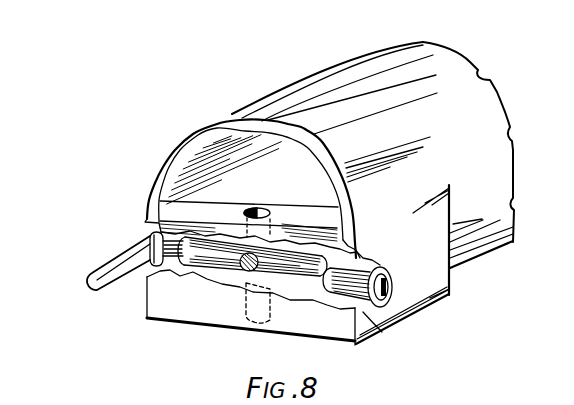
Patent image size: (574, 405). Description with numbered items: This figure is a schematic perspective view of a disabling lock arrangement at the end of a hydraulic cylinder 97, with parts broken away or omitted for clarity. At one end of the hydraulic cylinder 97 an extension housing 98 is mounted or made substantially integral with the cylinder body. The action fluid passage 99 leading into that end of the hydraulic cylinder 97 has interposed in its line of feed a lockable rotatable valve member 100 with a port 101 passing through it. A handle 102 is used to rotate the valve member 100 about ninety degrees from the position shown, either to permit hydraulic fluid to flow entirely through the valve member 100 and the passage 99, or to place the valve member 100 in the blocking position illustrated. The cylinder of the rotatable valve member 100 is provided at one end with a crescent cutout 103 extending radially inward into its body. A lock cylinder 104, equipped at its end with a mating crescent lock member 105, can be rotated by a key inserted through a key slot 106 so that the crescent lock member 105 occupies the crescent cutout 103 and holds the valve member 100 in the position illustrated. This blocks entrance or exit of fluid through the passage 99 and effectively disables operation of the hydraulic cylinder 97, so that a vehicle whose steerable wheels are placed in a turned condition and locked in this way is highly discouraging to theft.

The hydraulic cylinder 97 is at (329, 155).
The extension housing 98 is at (428, 288).
The action fluid passage 99 is at (261, 206).
The lockable rotatable valve member 100 is at (182, 268).
The port 101 is at (260, 259).
The handle 102 is at (113, 272).
The crescent cutout 103 is at (338, 300).
The lock cylinder 104 is at (286, 297).
The crescent lock member 105 is at (358, 250).
The key slot 106 is at (389, 278).